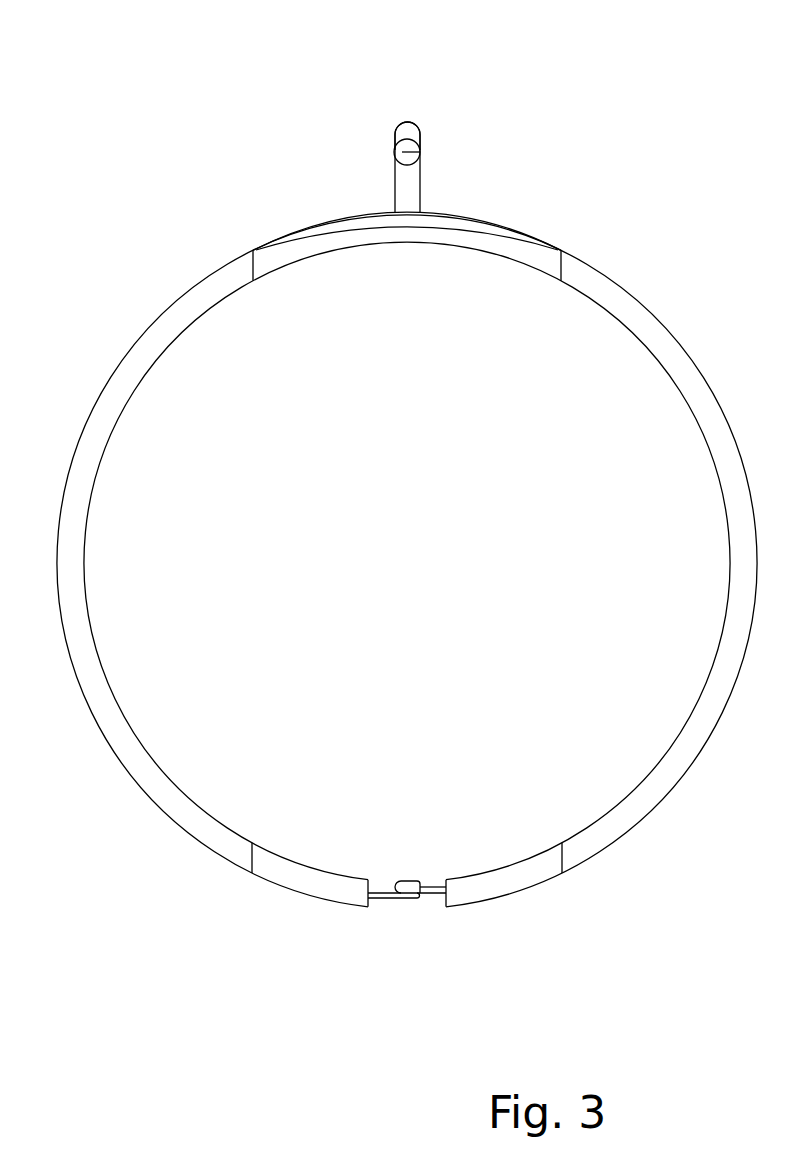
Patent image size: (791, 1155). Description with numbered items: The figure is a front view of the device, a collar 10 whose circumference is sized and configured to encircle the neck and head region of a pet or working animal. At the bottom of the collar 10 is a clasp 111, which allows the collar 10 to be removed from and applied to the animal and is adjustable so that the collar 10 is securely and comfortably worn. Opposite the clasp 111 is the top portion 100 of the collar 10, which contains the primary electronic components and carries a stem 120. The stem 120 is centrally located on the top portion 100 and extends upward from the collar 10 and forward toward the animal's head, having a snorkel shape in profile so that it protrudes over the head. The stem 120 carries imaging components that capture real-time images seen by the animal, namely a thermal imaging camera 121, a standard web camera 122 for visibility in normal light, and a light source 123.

The collar 10 is at (407, 458).
The top portion 100 is at (258, 247).
The clasp 111 is at (386, 903).
The stem 120 is at (413, 122).
The thermal imaging camera 121 is at (395, 142).
The standard web camera 122 is at (393, 158).
The light source 123 is at (420, 152).